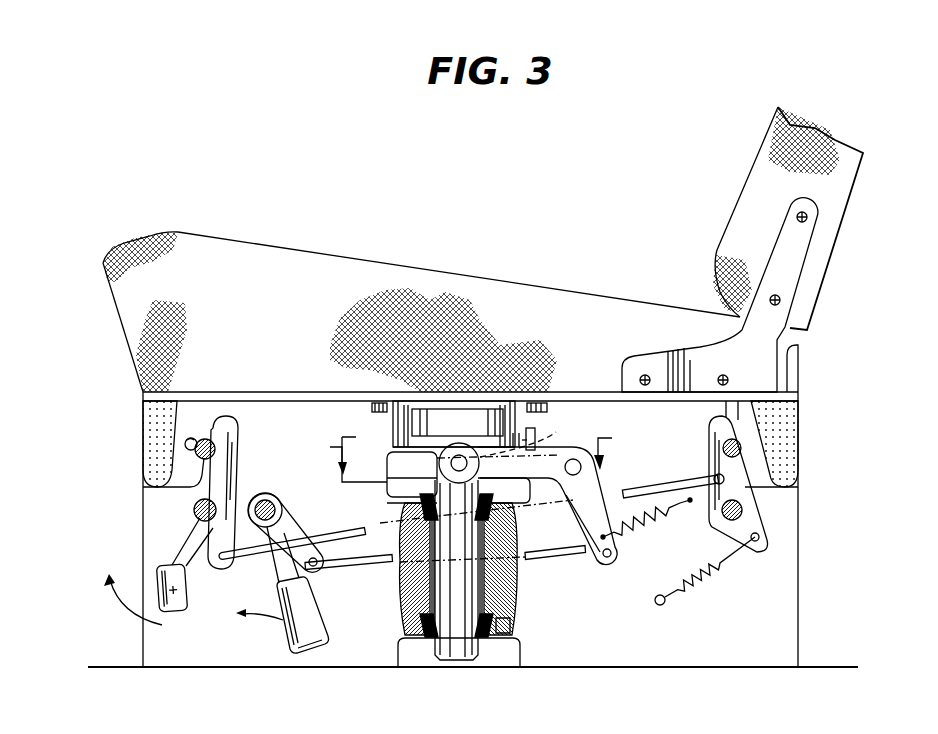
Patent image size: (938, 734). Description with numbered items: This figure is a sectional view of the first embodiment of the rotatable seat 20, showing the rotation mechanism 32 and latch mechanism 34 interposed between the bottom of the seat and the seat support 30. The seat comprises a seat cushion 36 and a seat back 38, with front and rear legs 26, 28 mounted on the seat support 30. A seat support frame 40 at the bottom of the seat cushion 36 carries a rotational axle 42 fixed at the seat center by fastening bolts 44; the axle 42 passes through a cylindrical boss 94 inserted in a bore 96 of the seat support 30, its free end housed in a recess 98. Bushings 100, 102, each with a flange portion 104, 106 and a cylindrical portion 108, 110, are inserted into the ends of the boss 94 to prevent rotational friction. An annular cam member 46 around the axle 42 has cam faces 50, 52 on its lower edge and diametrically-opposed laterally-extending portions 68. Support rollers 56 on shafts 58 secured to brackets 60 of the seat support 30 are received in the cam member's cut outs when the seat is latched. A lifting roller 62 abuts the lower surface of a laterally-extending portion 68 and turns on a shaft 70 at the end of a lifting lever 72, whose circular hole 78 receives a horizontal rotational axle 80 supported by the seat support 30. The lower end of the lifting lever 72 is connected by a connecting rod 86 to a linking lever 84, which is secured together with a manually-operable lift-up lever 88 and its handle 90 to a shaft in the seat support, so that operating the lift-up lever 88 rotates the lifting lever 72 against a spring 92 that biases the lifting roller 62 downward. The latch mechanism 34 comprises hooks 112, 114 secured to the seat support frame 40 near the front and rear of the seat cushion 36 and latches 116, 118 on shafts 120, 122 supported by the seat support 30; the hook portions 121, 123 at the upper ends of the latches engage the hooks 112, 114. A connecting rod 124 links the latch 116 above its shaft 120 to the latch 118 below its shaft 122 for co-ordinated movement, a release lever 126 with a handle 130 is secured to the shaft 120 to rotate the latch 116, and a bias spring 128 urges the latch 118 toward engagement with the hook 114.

The rotatable seat 20 is at (467, 249).
The front leg 26 is at (157, 440).
The rear leg 28 is at (777, 430).
The seat support 30 is at (150, 533).
The rotation mechanism 32 is at (547, 405).
The latch mechanism 34 is at (243, 427).
The seat cushion 36 is at (328, 282).
The seat back 38 is at (833, 190).
The seat support frame 40 is at (143, 393).
The rotational axle 42 is at (467, 583).
The fastening bolts 44 is at (383, 398).
The annular cam member 46 is at (400, 397).
The cam face 50 is at (413, 450).
The cam face 52 is at (560, 440).
The support rollers 56 is at (511, 395).
The shaft 58 is at (538, 400).
The brackets 60 is at (343, 466).
The lifting roller 62 is at (405, 498).
The laterally-extending portions 68 is at (458, 415).
The shafts 70 is at (387, 457).
The lifting lever 72 is at (598, 480).
The circular hole 78 is at (583, 562).
The rotational axle 80 is at (565, 469).
The linking lever 84 is at (298, 530).
The connecting rod 86 is at (263, 500).
The lift-up lever 88 is at (275, 570).
The handle 90 is at (287, 635).
The spring 92 is at (653, 523).
The cylindrical boss 94 is at (495, 598).
The bore 96 is at (407, 624).
The recess 98 is at (430, 657).
The bushing 100 is at (395, 520).
The bushing 102 is at (423, 637).
The flange portion 104 is at (502, 510).
The flange portion 106 is at (502, 640).
The cylindrical portion 108 is at (502, 530).
The cylindrical portion 110 is at (510, 630).
The hook 112 is at (196, 434).
The hook 114 is at (733, 410).
The latch 116 is at (143, 487).
The latch 118 is at (740, 483).
The shaft 120 is at (196, 511).
The hook portion 121 is at (187, 440).
The shaft 122 is at (745, 512).
The hook portion 123 is at (748, 446).
The connecting rod 124 is at (330, 570).
The release lever 126 is at (165, 552).
The bias spring 128 is at (707, 583).
The handle 130 is at (172, 598).